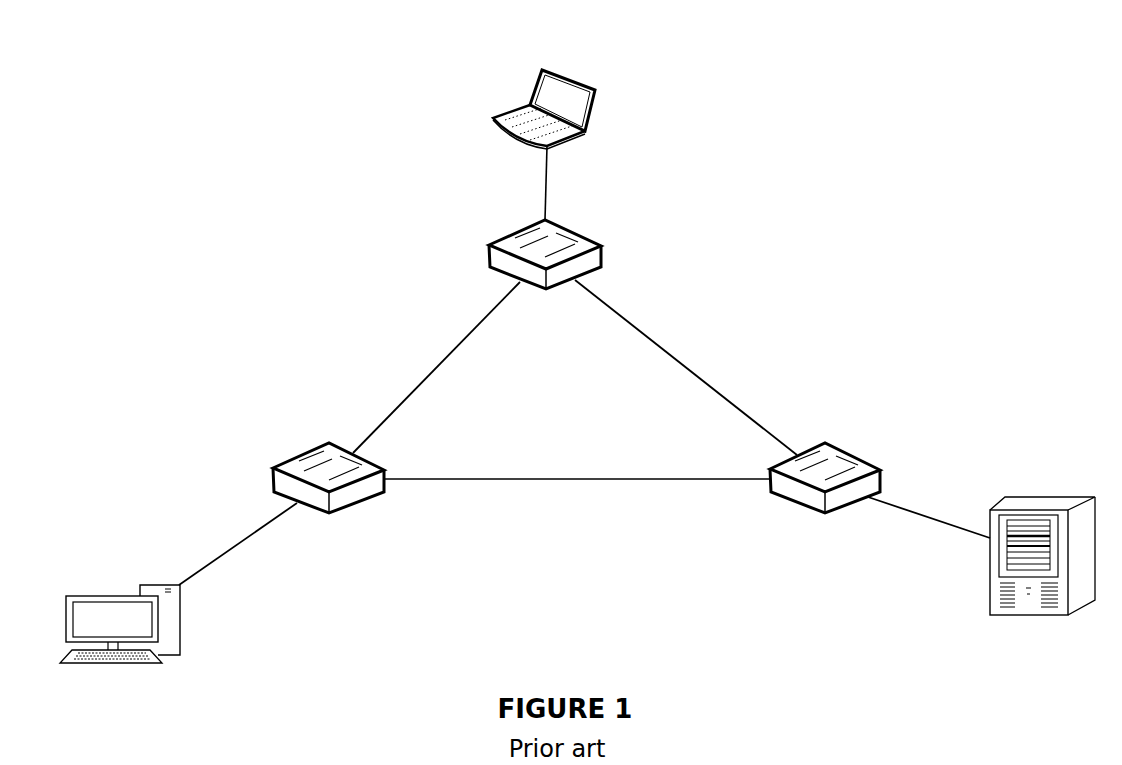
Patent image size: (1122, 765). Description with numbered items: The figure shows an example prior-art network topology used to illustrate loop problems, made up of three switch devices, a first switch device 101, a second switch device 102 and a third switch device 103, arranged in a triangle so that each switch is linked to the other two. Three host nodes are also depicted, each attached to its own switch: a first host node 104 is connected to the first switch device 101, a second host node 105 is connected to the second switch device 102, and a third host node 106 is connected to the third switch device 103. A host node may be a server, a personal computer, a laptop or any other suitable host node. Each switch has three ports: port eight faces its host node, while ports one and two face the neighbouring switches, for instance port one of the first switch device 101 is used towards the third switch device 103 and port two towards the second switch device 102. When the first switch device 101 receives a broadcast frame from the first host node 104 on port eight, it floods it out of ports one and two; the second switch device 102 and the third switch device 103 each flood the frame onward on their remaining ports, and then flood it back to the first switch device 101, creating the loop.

The switch device SW-A 101 is at (328, 498).
The switch device SW-B 102 is at (826, 498).
The switch device SW-C 103 is at (544, 271).
The host node N-X 104 is at (120, 657).
The host node N-Y 105 is at (1042, 589).
The host node N-Z 106 is at (544, 85).